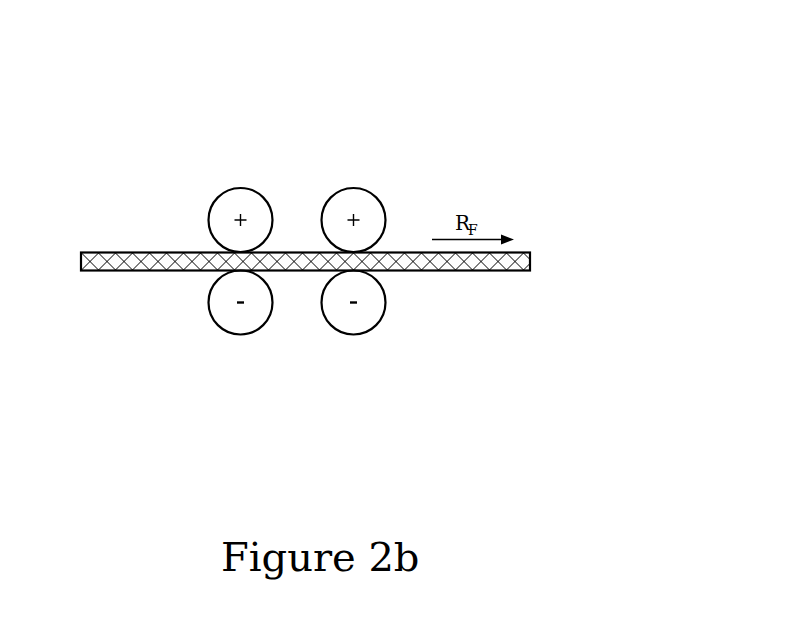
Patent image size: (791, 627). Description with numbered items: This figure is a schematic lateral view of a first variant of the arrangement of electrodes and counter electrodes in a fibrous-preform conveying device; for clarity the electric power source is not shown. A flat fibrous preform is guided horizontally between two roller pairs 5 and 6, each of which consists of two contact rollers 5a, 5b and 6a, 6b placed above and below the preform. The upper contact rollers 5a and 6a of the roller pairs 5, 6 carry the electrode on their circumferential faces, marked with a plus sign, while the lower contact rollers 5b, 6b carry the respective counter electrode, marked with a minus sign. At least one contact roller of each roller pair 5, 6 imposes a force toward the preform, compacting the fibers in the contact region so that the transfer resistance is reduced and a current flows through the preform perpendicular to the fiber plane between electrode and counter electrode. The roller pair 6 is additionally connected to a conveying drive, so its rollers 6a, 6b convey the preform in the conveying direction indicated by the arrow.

The roller pair 5 is at (219, 174).
The upper contact roller of the roller pair 5 5a is at (192, 213).
The lower contact roller of the roller pair 5 5b is at (207, 317).
The roller pair 6 is at (373, 169).
The upper contact roller of the roller pair 6 6a is at (393, 190).
The lower contact roller of the roller pair 6 6b is at (390, 308).